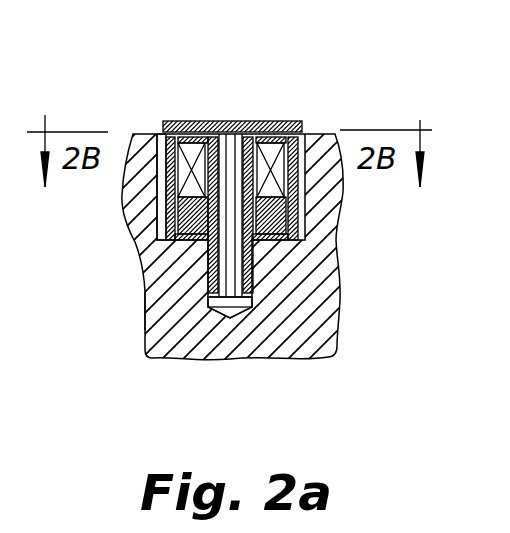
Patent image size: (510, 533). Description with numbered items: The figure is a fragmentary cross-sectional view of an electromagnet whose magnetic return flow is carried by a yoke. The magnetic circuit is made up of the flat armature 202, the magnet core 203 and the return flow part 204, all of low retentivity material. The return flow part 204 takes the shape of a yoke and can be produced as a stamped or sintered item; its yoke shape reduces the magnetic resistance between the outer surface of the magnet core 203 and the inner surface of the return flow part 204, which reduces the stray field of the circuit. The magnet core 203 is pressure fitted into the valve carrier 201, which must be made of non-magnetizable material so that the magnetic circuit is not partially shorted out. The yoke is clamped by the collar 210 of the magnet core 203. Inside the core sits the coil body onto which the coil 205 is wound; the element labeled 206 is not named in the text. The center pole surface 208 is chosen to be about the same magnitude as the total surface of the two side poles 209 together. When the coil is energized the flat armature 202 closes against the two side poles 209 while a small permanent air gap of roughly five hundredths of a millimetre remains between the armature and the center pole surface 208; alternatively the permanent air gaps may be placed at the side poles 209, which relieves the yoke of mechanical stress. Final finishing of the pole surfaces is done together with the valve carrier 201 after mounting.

The valve carrier 201 is at (153, 335).
The flat armature 202 is at (285, 125).
The magnet core 203 is at (252, 262).
The return flow part 204 is at (253, 288).
The coil 205 is at (280, 176).
The bobbin 206 is at (289, 219).
The center pole surface 208 is at (222, 138).
The side poles 209 is at (163, 160).
The collar 210 is at (146, 303).